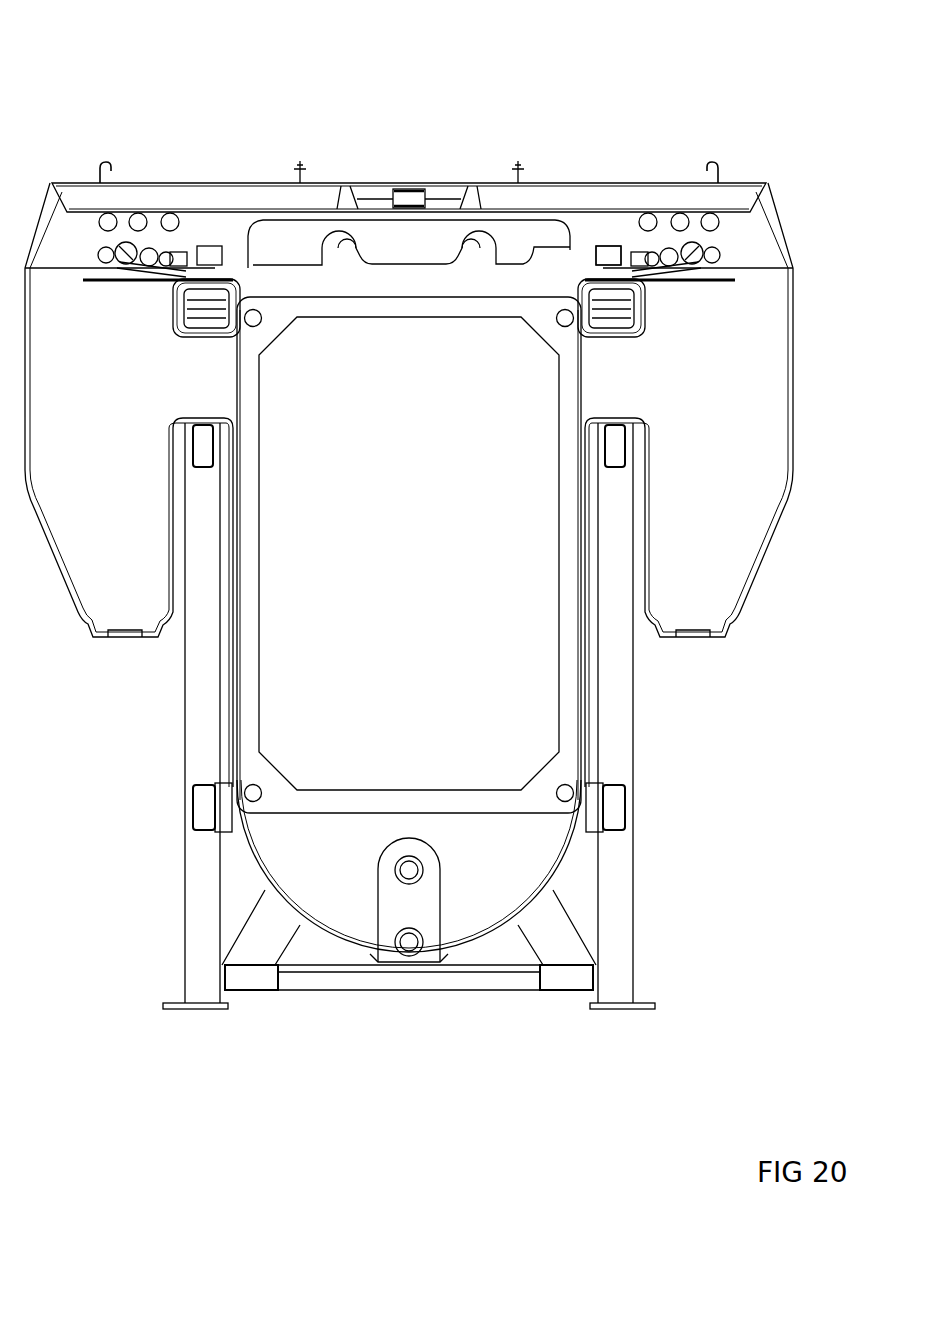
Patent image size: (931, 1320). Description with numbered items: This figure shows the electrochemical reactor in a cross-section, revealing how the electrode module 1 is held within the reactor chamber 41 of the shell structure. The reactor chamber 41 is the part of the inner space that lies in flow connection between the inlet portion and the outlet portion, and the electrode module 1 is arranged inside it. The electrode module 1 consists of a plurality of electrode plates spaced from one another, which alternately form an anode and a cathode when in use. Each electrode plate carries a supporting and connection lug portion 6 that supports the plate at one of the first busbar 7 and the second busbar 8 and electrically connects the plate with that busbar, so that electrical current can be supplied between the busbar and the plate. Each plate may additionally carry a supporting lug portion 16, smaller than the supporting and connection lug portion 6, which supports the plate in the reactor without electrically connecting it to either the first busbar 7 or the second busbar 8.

The electrode module 1 is at (293, 697).
The supporting and connection lug portion 6 is at (238, 252).
The first busbar 7 is at (220, 266).
The second busbar 8 is at (599, 267).
The supporting lug portion 16 is at (580, 252).
The reactor chamber 41 is at (505, 858).